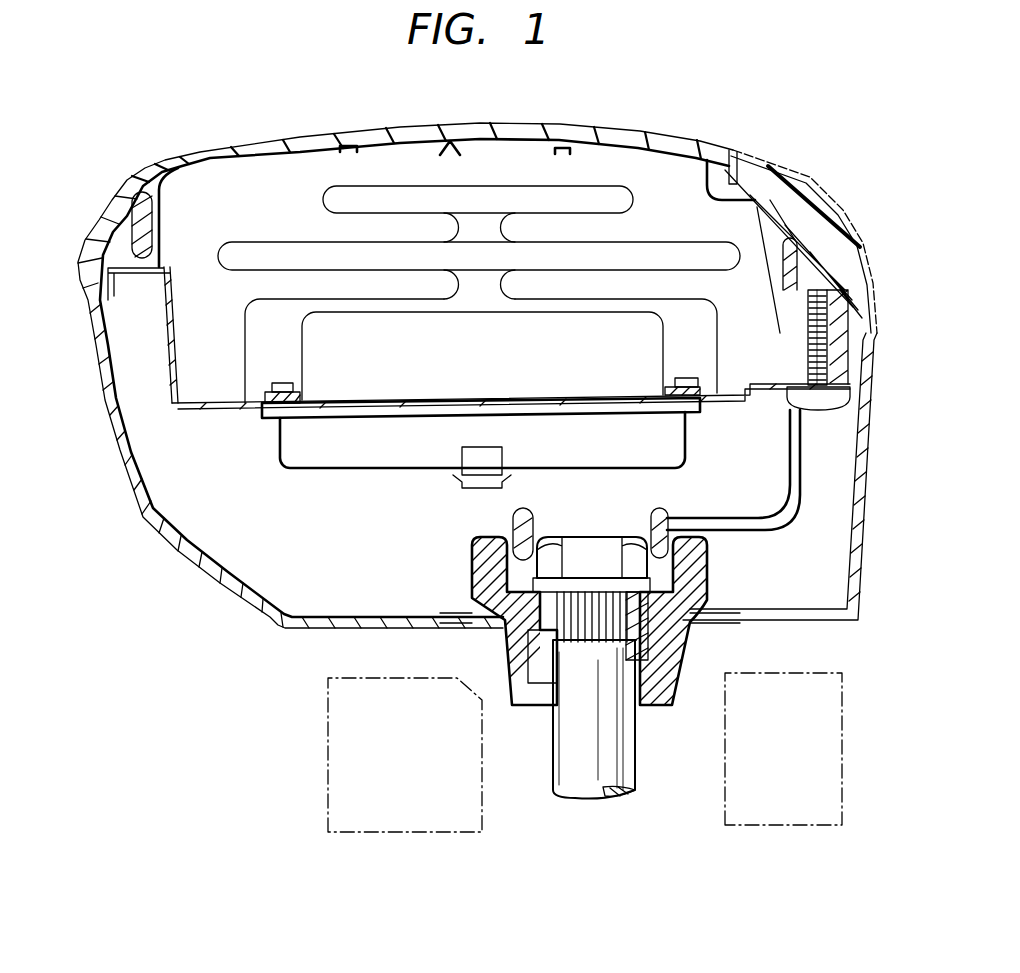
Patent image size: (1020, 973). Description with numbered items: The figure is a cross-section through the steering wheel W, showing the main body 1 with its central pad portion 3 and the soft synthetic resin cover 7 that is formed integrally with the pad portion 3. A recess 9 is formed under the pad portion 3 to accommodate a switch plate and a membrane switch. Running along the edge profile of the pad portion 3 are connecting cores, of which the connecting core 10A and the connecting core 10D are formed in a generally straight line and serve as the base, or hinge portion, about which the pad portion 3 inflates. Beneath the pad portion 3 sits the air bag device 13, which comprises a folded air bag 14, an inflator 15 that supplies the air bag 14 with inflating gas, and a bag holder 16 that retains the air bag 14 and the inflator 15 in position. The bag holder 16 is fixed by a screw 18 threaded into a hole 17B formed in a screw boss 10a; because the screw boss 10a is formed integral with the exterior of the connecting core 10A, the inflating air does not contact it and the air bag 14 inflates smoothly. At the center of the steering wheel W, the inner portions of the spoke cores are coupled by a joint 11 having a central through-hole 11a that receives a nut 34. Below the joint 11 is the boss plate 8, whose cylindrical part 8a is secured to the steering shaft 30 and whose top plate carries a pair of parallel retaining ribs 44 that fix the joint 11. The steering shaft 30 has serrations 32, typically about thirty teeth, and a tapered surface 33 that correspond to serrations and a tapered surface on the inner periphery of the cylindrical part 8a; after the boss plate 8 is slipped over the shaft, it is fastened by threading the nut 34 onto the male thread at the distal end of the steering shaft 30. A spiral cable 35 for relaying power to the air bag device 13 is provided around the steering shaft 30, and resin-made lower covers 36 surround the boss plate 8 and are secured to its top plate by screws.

The main body 1 is at (484, 351).
The pad portion 3 is at (484, 134).
The steering wheel W is at (820, 138).
The cover 7 is at (851, 214).
The recess 9 is at (479, 289).
The air bag 14 is at (640, 192).
The connecting core 10D is at (154, 224).
The connecting core 10A is at (783, 283).
The hole 17B is at (830, 298).
The screw boss 10a is at (852, 332).
The bag holder 16 is at (166, 333).
The air bag device 13 is at (260, 463).
The inflator 15 is at (340, 472).
The screw 18 is at (823, 410).
The through-hole 11a is at (537, 526).
The nut 34 is at (600, 545).
The joint 11 is at (668, 512).
The retaining ribs 44 is at (710, 553).
The lower covers 36 is at (868, 507).
The serrations 32 is at (654, 622).
The tapered surface 33 is at (541, 684).
The cylindrical part 8a is at (580, 641).
The boss plate 8 is at (580, 658).
The steering shaft 30 is at (640, 786).
The spiral cable 35 is at (328, 752).